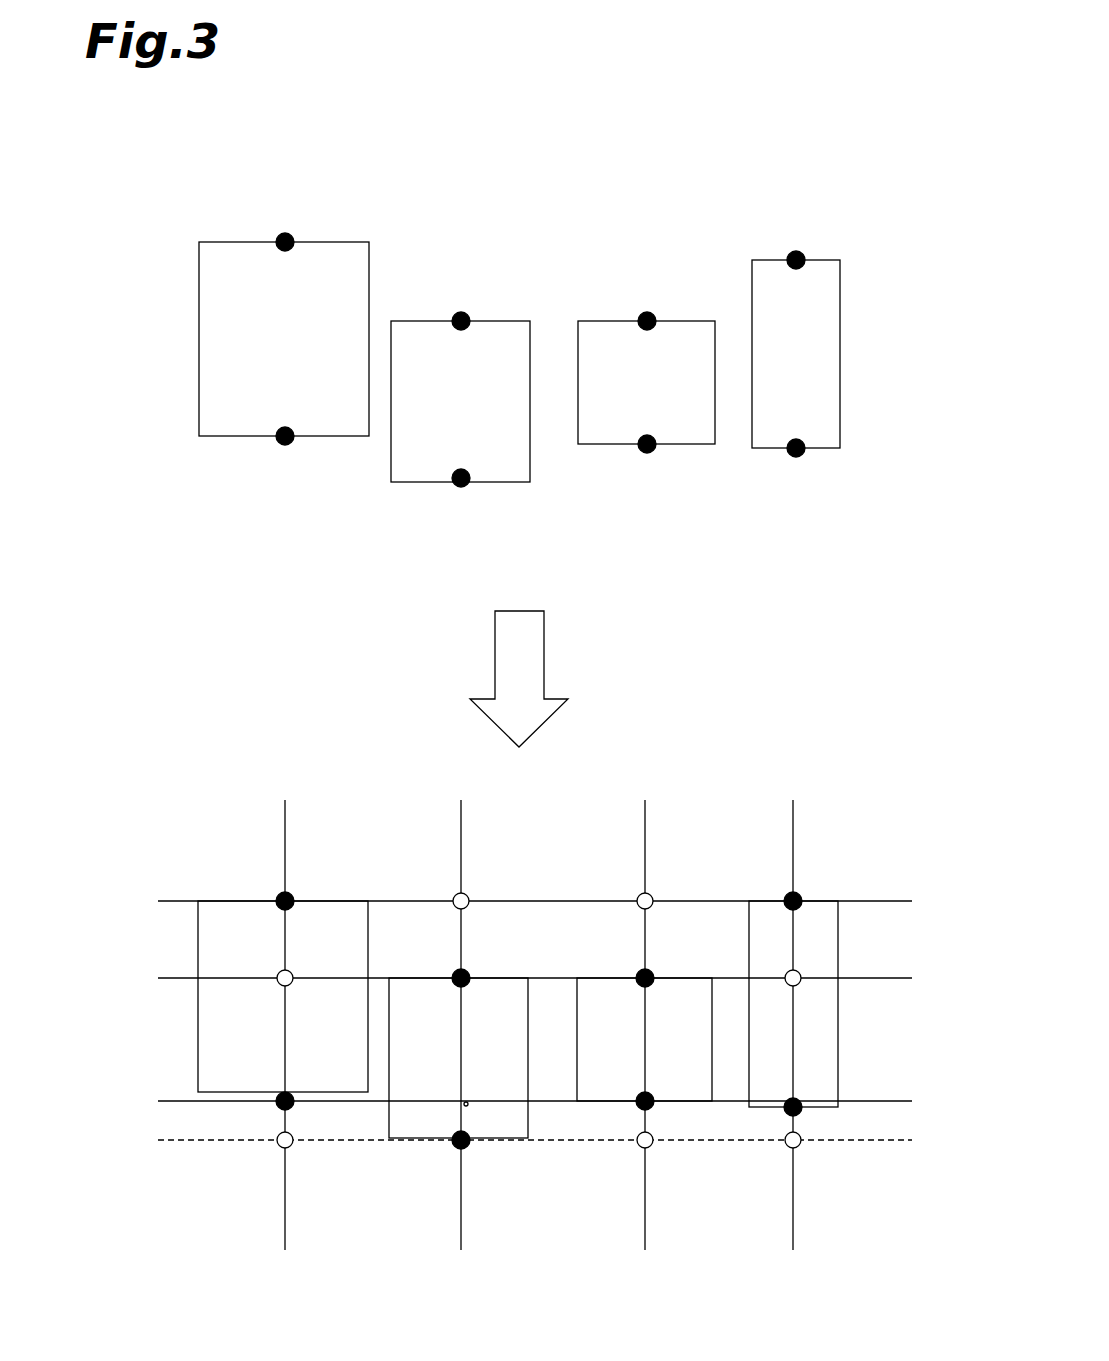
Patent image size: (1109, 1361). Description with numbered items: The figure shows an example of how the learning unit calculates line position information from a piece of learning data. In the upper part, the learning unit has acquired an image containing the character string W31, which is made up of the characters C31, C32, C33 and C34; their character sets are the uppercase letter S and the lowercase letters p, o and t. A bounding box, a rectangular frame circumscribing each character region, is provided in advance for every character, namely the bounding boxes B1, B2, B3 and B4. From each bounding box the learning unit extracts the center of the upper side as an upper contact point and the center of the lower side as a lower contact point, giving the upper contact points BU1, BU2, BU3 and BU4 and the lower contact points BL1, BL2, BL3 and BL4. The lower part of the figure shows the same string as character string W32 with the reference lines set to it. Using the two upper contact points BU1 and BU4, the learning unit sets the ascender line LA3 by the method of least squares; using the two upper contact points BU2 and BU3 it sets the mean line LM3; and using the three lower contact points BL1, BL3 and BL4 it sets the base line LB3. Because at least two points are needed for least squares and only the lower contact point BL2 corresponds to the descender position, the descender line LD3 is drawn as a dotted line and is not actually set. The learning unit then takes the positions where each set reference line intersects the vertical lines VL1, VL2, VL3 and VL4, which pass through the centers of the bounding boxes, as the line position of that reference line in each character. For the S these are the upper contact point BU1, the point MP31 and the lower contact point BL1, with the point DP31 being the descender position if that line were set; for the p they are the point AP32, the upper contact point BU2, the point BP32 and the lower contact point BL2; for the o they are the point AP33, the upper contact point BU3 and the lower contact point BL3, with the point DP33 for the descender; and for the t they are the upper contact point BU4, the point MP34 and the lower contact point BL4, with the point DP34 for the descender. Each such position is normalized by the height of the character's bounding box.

The character string W31 is at (758, 121).
The character string W32 is at (815, 805).
The character C31 is at (317, 192).
The character C32 is at (480, 249).
The character C33 is at (667, 264).
The character C34 is at (831, 239).
The bounding box B1 is at (351, 241).
The bounding box B2 is at (510, 320).
The bounding box B3 is at (695, 320).
The bounding box B4 is at (841, 281).
The upper contact point BU1 is at (284, 232).
The upper contact point BU2 is at (460, 311).
The upper contact point BU3 is at (646, 311).
The upper contact point BU4 is at (795, 250).
The lower contact point BL1 is at (285, 446).
The lower contact point BL2 is at (461, 488).
The lower contact point BL3 is at (647, 454).
The lower contact point BL4 is at (797, 458).
The vertical line VL1 is at (285, 818).
The vertical line VL2 is at (461, 818).
The vertical line VL3 is at (645, 818).
The vertical line VL4 is at (793, 818).
The ascender line LA3 is at (158, 901).
The mean line LM3 is at (158, 978).
The base line LB3 is at (158, 1101).
The descender line LD3 is at (158, 1140).
The point MP31 is at (290, 970).
The point AP32 is at (458, 892).
The point AP33 is at (642, 892).
The point MP34 is at (801, 976).
The point BP32 is at (468, 1106).
The point DP31 is at (280, 1148).
The point DP33 is at (640, 1148).
The point DP34 is at (788, 1148).